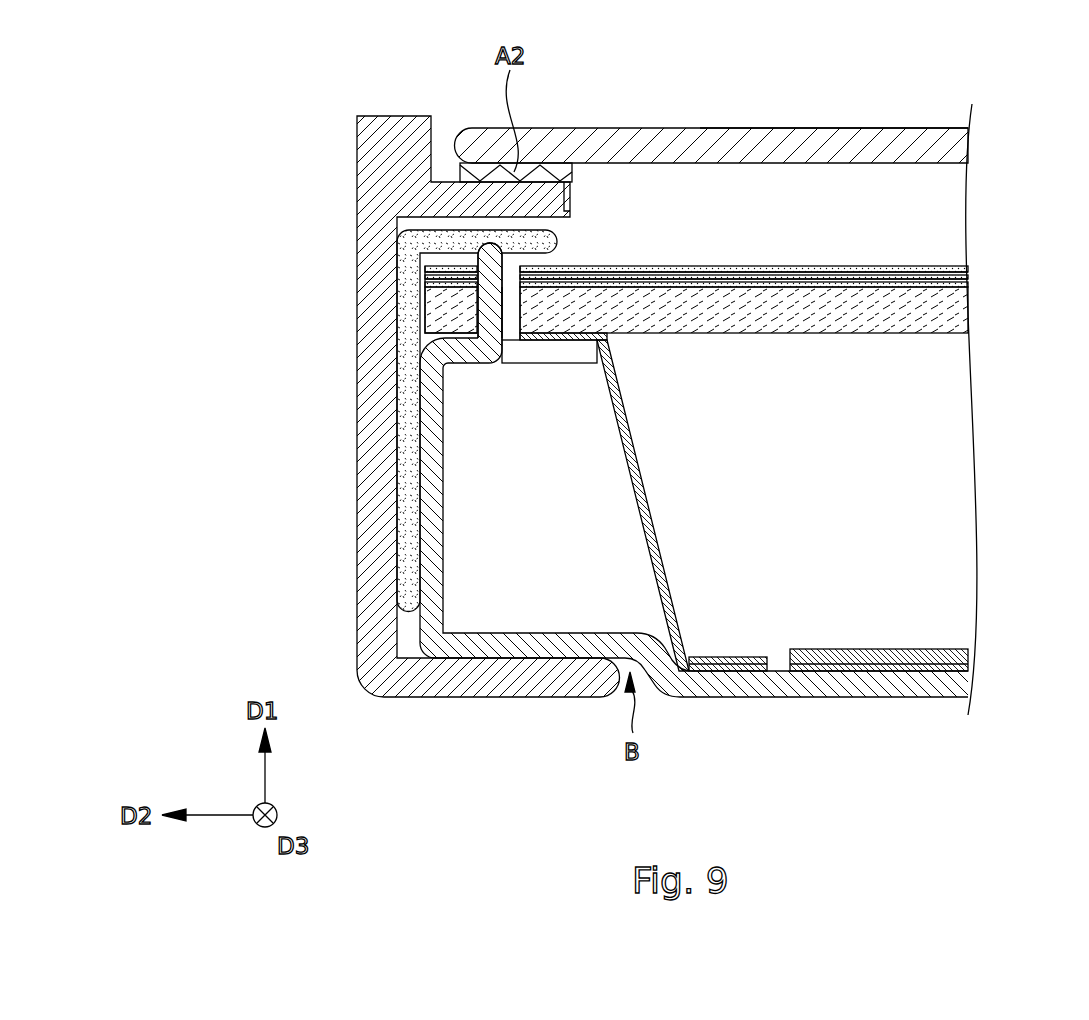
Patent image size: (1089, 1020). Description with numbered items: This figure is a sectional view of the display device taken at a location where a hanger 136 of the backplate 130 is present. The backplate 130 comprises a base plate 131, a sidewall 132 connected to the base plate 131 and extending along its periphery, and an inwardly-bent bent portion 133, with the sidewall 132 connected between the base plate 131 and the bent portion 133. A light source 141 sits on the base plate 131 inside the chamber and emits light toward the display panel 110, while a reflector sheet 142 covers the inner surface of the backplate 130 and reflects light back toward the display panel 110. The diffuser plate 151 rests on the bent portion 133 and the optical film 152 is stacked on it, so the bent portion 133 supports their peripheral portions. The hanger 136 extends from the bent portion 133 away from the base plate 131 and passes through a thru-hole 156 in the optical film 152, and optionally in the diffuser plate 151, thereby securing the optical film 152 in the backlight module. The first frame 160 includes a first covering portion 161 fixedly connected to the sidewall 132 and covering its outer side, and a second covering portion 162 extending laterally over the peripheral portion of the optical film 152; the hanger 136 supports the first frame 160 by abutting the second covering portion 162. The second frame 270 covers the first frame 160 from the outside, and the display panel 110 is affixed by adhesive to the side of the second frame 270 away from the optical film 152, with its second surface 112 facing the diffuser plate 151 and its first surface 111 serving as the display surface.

The display panel 110 is at (958, 150).
The first surface 111 is at (868, 118).
The second surface 112 is at (780, 150).
The backplate 130 is at (666, 412).
The base plate 131 is at (727, 680).
The sidewall 132 is at (432, 404).
The bent portion 133 is at (587, 352).
The hanger 136 is at (483, 322).
The light source 141 is at (857, 662).
The reflector sheet 142 is at (647, 510).
The diffuser plate 151 is at (958, 316).
The optical film 152 is at (966, 266).
The thru-hole 156 is at (488, 297).
The first frame 160 is at (385, 402).
The first covering portion 161 is at (407, 290).
The second covering portion 162 is at (478, 243).
The second frame 270 is at (377, 455).